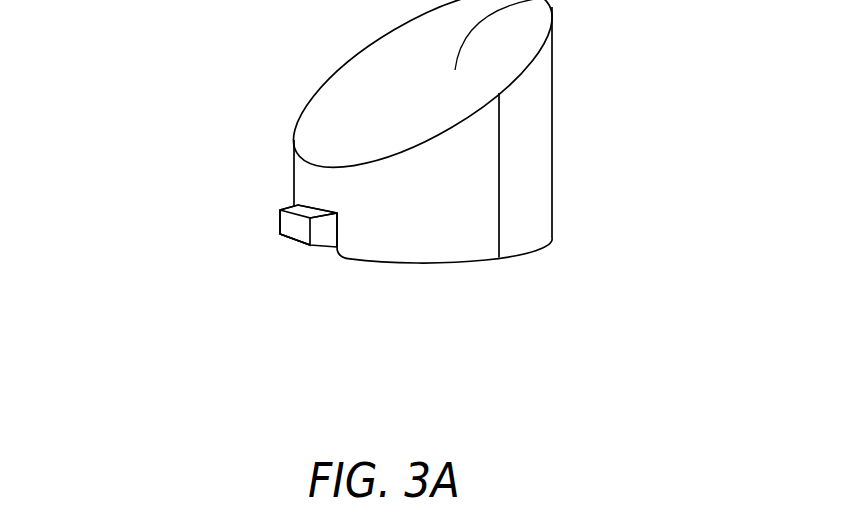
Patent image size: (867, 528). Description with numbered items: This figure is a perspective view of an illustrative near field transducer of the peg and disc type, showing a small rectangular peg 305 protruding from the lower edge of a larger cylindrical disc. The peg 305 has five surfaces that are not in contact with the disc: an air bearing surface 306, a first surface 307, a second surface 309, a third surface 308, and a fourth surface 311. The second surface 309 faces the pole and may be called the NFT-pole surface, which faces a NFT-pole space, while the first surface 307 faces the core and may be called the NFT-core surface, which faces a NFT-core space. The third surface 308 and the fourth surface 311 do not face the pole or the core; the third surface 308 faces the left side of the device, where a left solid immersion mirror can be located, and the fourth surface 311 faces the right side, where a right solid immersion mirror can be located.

The peg 305 is at (305, 248).
The air bearing surface 306 is at (294, 228).
The first surface 307 is at (322, 233).
The third surface 308 is at (307, 246).
The second surface 309 is at (309, 211).
The fourth surface 311 is at (279, 211).